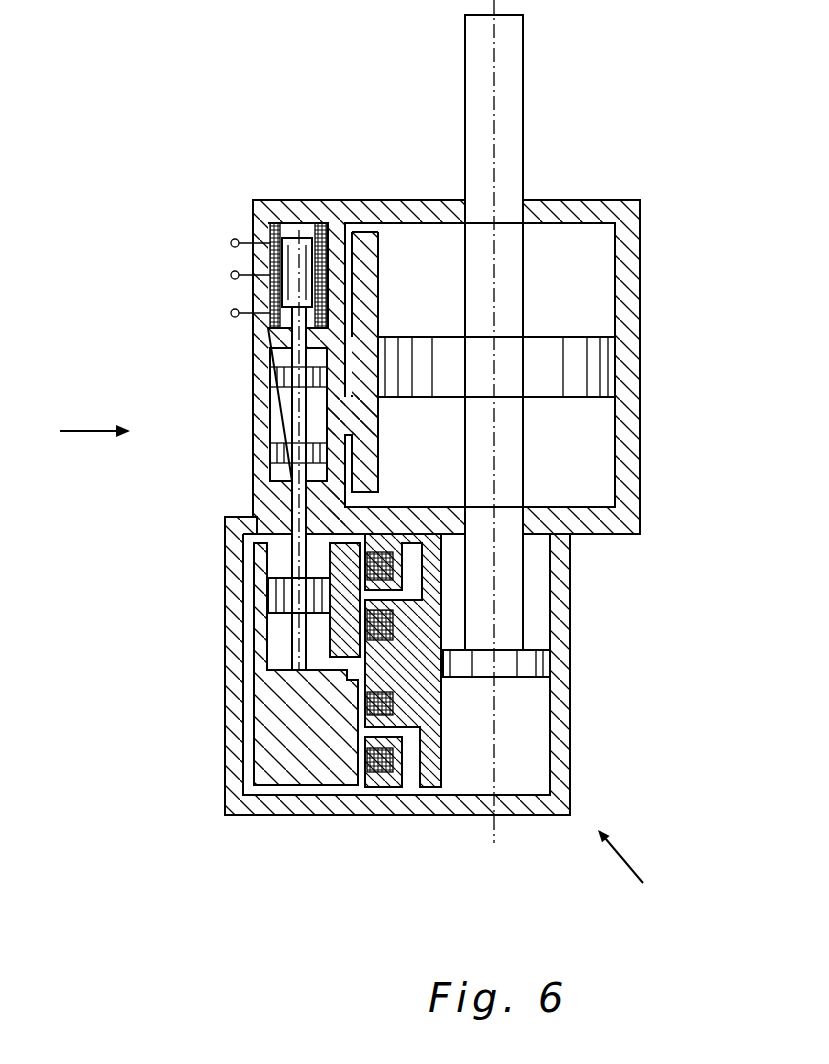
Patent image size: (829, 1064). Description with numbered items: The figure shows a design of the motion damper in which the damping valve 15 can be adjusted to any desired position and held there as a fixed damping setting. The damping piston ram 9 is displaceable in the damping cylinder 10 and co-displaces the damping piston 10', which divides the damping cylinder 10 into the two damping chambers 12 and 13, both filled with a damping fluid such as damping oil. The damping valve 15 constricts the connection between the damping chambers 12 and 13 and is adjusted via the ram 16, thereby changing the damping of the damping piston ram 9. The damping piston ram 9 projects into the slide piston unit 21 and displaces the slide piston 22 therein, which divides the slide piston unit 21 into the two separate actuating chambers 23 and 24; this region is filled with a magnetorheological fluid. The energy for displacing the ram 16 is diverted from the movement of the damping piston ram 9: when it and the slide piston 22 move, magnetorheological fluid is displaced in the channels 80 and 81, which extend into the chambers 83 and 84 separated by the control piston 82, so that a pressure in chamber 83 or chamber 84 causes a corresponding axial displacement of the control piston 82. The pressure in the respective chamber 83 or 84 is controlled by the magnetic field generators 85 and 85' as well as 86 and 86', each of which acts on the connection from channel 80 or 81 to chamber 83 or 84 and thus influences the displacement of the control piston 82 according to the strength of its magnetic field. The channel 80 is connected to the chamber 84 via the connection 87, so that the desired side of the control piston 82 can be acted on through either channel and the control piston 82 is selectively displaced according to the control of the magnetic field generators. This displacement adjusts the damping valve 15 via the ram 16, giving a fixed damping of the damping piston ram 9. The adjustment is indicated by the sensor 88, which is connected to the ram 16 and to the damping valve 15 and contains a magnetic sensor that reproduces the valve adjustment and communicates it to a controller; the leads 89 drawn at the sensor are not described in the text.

The damping piston ram 9 is at (508, 112).
The damping cylinder 10 is at (496, 345).
The damping piston 10' is at (562, 367).
The damping chamber 12 is at (593, 305).
The damping chamber 13 is at (597, 457).
The damping valve 15 is at (74, 432).
The ram 16 is at (265, 490).
The slide piston unit 21 is at (632, 878).
The slide piston 22 is at (540, 663).
The actuating chamber 23 is at (540, 592).
The actuating chamber 24 is at (527, 745).
The channel 80 is at (417, 770).
The channel 81 is at (405, 557).
The control piston 82 is at (285, 592).
The chamber 83 is at (283, 638).
The chamber 84 is at (280, 563).
The magnetic field generator 85 is at (265, 762).
The magnetic field generator 85' is at (519, 709).
The magnetic field generator 86 is at (248, 584).
The magnetic field generator 86' is at (523, 630).
The connection 87 is at (265, 795).
The sensor 88 is at (292, 235).
The electrical leads 89 is at (229, 312).